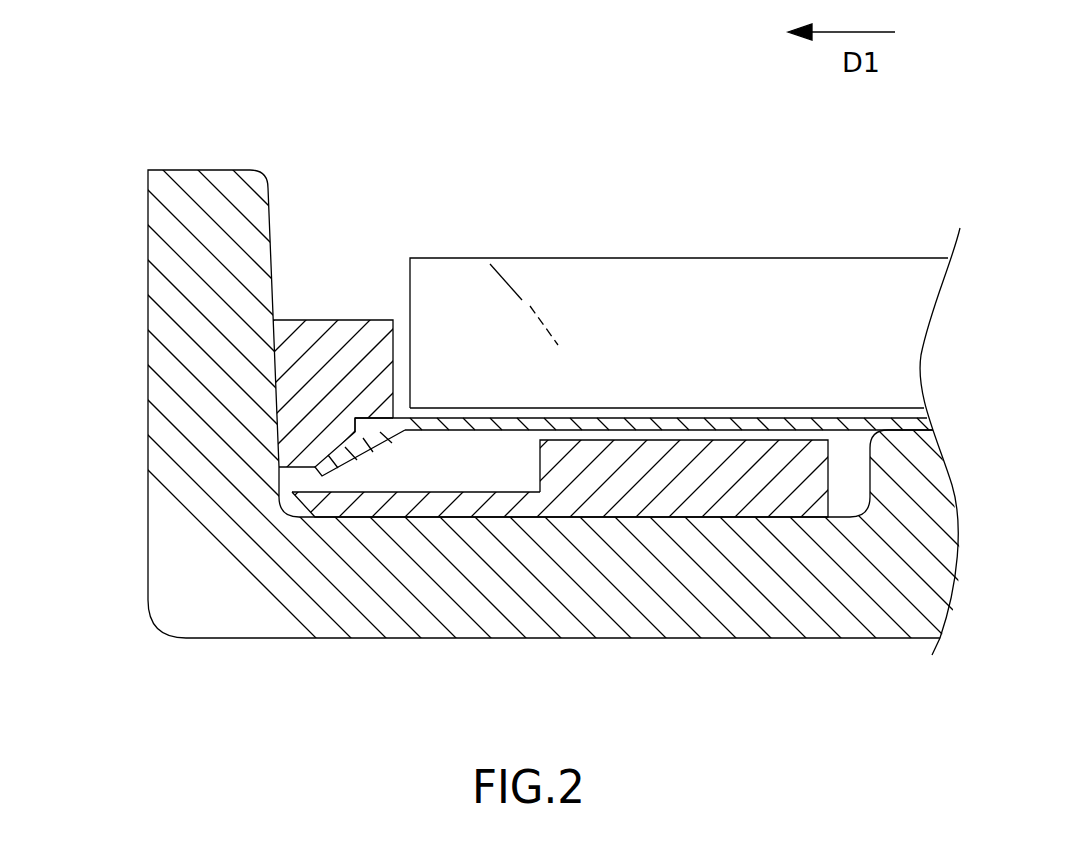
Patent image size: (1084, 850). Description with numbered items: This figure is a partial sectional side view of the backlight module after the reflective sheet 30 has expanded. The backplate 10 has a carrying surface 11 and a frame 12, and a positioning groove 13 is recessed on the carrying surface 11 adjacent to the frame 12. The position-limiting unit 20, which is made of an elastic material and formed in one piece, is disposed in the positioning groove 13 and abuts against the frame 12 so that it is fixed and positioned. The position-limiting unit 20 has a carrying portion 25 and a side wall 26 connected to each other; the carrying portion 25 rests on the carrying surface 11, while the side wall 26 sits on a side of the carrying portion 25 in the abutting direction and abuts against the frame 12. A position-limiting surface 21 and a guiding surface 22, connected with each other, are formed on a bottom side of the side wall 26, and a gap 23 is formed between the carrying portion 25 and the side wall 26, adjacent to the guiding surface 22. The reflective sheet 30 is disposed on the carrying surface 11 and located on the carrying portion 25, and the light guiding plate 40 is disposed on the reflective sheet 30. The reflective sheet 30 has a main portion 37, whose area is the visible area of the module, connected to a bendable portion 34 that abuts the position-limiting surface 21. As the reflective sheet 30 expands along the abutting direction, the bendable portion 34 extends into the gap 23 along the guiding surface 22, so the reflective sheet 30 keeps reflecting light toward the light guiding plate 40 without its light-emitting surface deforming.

The backplate 10 is at (542, 414).
The carrying surface 11 is at (634, 516).
The frame 12 is at (201, 187).
The positioning groove 13 is at (868, 472).
The position-limiting unit 20 is at (302, 336).
The position-limiting surface 21 is at (362, 417).
The guiding surface 22 is at (300, 466).
The gap 23 is at (483, 477).
The carrying portion 25 is at (562, 573).
The side wall 26 is at (352, 350).
The reflective sheet 30 is at (618, 513).
The bendable portion 34 is at (377, 437).
The main portion 37 is at (713, 417).
The light guiding plate 40 is at (692, 285).